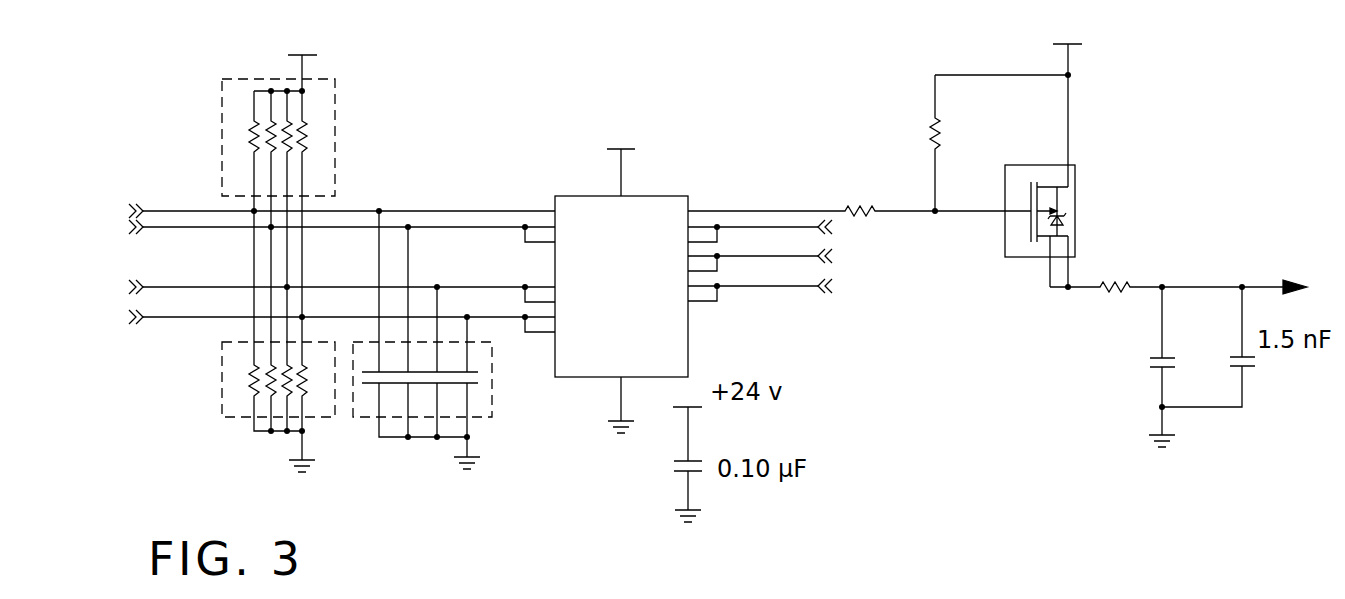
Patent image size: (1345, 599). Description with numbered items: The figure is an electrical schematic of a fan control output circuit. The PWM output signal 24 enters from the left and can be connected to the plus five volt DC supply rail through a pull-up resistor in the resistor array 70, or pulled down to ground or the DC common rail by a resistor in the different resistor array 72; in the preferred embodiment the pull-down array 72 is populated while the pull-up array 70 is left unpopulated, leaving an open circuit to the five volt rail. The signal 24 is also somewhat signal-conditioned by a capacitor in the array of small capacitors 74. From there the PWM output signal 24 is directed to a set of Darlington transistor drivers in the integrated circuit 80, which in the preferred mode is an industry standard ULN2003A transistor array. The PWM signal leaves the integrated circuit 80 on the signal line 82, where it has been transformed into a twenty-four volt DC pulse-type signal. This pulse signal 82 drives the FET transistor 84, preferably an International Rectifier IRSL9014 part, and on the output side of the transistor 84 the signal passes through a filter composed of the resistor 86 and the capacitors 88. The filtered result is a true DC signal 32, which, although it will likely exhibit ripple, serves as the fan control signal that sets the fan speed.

The PWM output signal 24 is at (188, 211).
The resistor array 70 is at (344, 146).
The resistor array 72 is at (231, 425).
The array of small capacitors 74 is at (484, 425).
The integrated circuit 80 is at (578, 195).
The signal line 82 is at (709, 209).
The FET transistor 84 is at (1075, 180).
The resistor 86 is at (1112, 293).
The capacitors 88 is at (1146, 384).
The DC signal 32 is at (1270, 283).